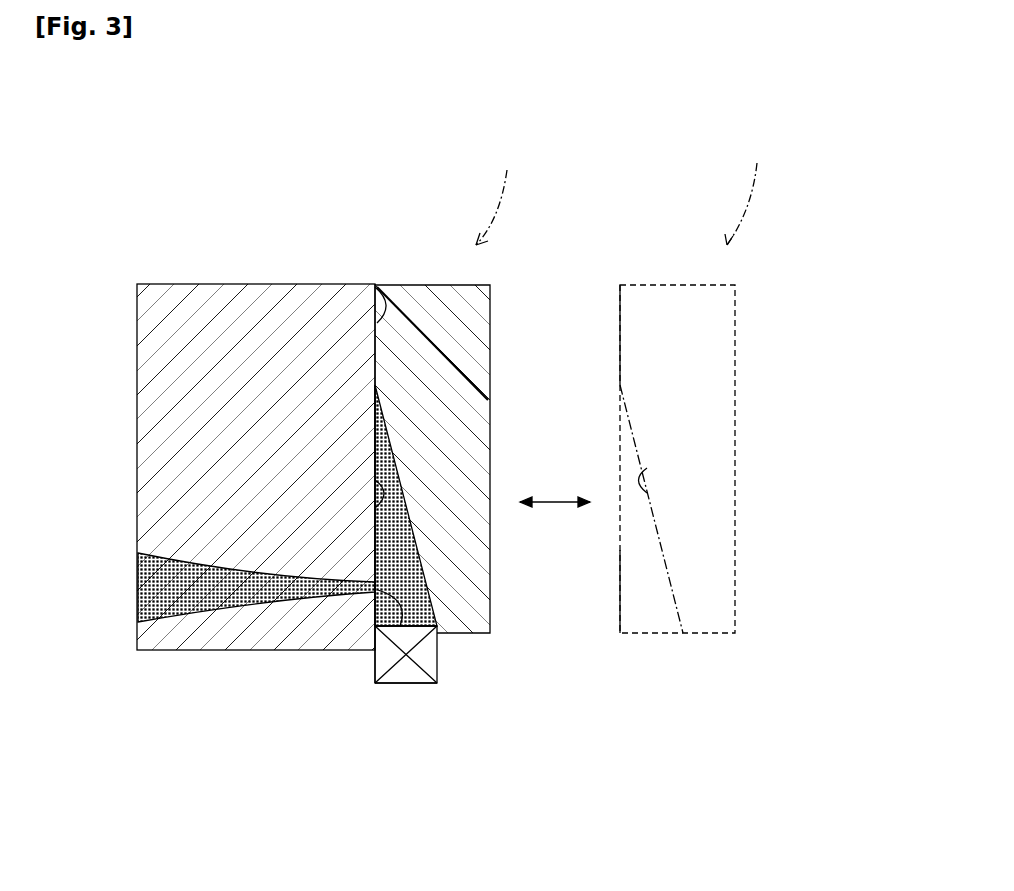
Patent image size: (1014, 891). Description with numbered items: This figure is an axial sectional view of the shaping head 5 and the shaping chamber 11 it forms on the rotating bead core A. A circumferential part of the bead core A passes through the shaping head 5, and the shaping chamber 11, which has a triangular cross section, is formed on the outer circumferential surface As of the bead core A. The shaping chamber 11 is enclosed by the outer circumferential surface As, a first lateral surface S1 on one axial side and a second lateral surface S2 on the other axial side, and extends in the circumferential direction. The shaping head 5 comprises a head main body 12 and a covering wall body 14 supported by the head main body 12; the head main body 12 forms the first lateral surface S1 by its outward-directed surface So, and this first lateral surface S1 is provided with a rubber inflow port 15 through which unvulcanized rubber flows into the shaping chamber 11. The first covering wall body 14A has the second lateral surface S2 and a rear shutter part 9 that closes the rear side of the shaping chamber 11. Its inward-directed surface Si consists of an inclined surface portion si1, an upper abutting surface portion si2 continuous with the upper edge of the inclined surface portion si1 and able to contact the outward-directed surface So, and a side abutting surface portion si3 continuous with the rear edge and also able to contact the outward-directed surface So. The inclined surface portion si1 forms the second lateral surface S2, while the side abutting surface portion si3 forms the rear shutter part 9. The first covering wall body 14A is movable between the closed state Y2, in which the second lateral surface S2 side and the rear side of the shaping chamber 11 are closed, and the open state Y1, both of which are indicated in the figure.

The shaping head 5 is at (243, 152).
The head main body 12 is at (269, 300).
The covering wall body 14 is at (431, 300).
The first covering wall body 14A is at (674, 300).
The shaping chamber 11 is at (308, 578).
The rubber inflow port 15 is at (377, 665).
The outward-directed surface so is at (388, 290).
The inward-directed surface si is at (376, 373).
The first lateral surface S1 is at (375, 510).
The second lateral surface S2 is at (375, 445).
The inclined surface portion si1 is at (650, 498).
The upper abutting surface portion si2 is at (620, 325).
The side abutting surface portion si3 is at (623, 645).
The rear shutter part 9 is at (620, 550).
The bead core A is at (405, 684).
The outer circumferential surface As is at (423, 624).
The open state Y1 is at (749, 188).
The closed state Y2 is at (499, 194).